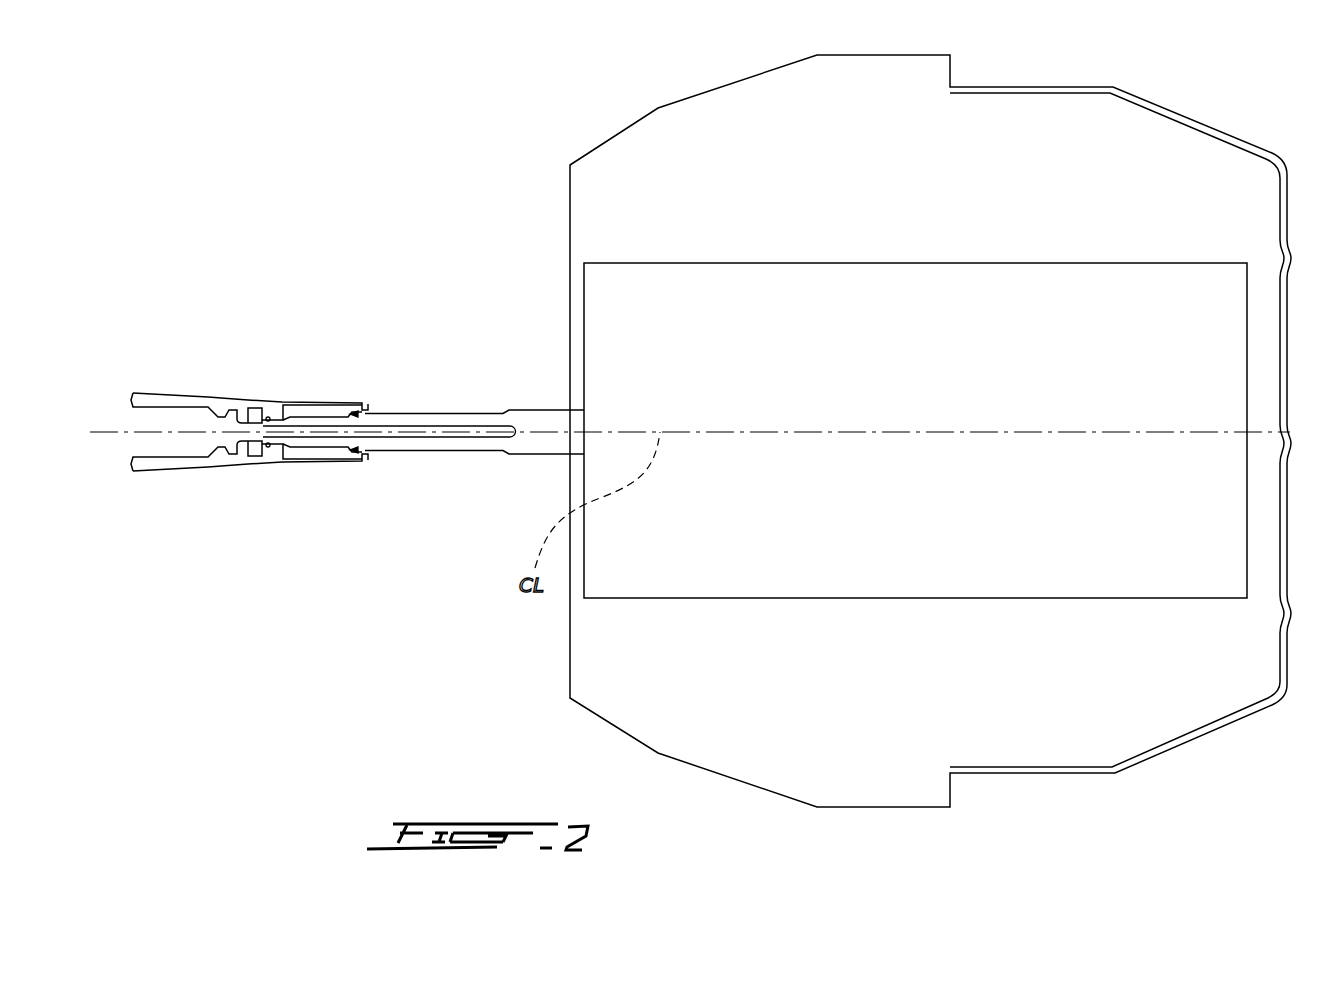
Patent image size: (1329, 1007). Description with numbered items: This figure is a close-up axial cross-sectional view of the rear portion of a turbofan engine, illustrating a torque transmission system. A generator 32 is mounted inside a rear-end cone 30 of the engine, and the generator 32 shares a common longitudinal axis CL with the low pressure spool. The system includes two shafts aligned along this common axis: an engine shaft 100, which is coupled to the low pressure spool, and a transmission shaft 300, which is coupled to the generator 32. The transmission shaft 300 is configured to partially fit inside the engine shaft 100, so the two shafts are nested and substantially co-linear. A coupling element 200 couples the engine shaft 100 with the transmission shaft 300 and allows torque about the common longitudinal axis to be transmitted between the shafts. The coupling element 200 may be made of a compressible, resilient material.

The rear-end cone 30 is at (1031, 86).
The generator 32 is at (930, 319).
The engine shaft 100 is at (232, 472).
The coupling element 200 is at (329, 409).
The transmission shaft 300 is at (521, 412).